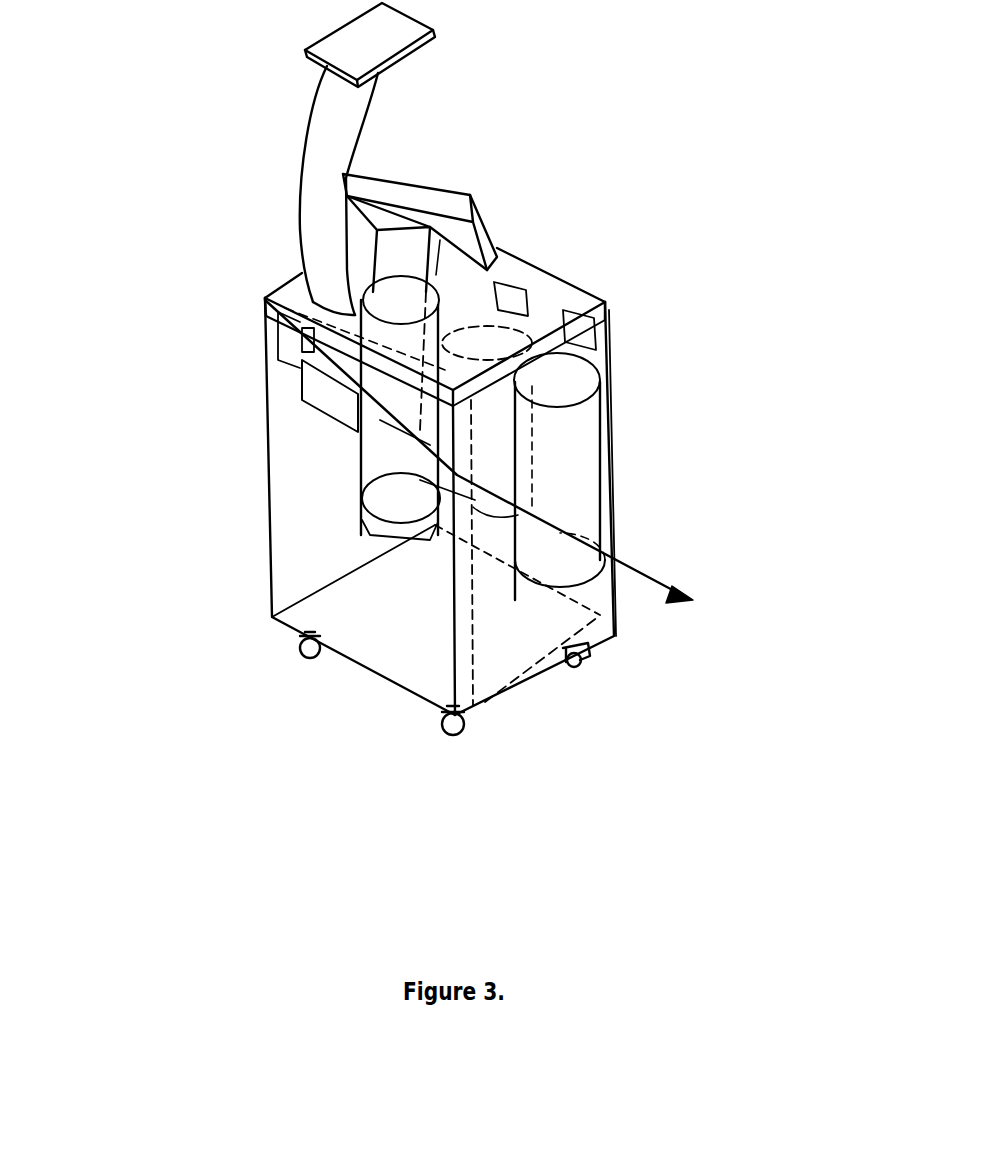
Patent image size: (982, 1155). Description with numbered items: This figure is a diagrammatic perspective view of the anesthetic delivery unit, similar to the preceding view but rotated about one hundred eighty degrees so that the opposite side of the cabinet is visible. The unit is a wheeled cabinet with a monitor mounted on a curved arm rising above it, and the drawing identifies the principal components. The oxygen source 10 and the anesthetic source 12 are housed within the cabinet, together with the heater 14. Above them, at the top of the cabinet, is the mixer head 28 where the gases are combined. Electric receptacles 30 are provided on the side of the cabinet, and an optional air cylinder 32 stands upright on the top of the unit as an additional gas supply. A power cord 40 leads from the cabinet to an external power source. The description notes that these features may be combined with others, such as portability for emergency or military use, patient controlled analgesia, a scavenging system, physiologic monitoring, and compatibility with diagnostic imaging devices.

The oxygen source 10 is at (107, 490).
The anesthetic source 12 is at (425, 465).
The heater 14 is at (385, 527).
The mixer head 28 is at (413, 198).
The electric receptacles 30 is at (60, 183).
The optional air cylinder 32 is at (590, 443).
The power cord 40 is at (890, 538).